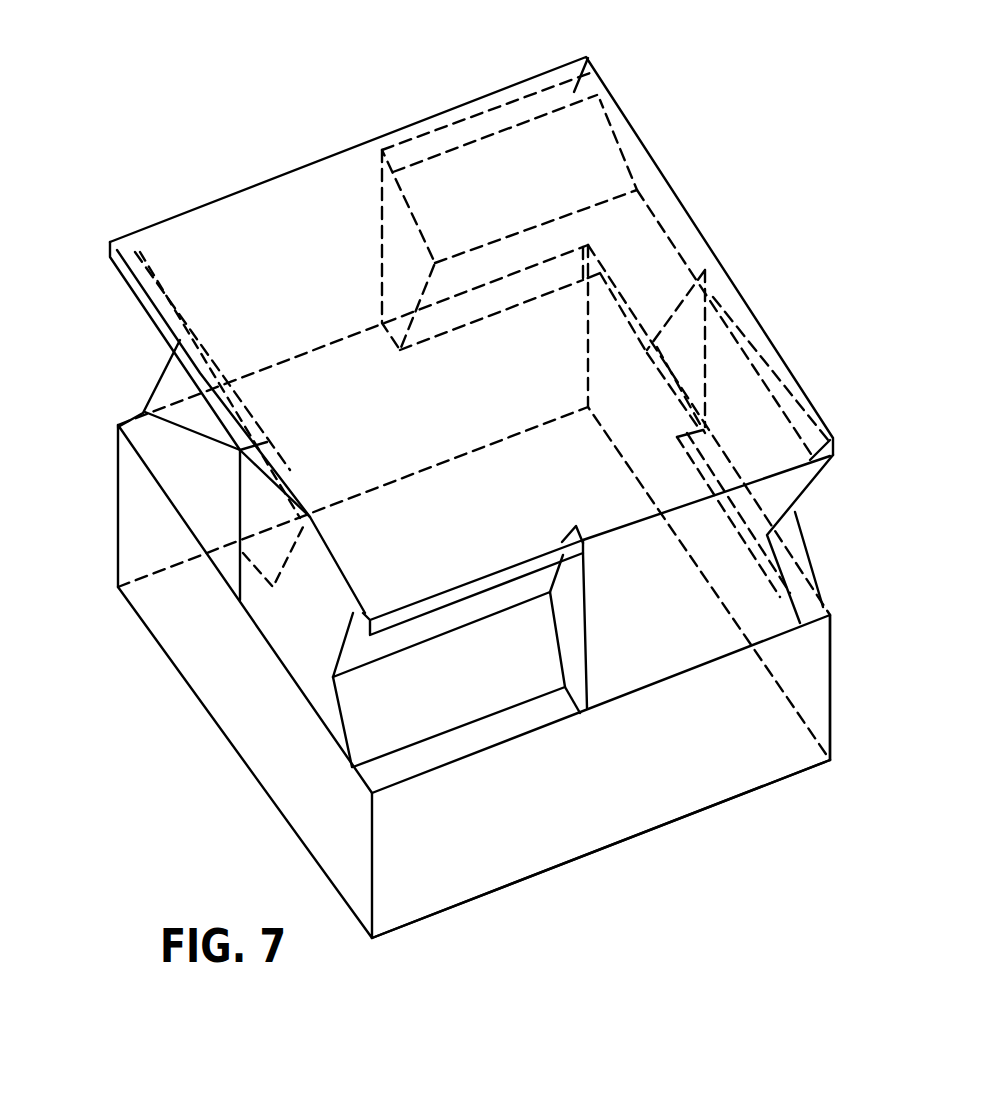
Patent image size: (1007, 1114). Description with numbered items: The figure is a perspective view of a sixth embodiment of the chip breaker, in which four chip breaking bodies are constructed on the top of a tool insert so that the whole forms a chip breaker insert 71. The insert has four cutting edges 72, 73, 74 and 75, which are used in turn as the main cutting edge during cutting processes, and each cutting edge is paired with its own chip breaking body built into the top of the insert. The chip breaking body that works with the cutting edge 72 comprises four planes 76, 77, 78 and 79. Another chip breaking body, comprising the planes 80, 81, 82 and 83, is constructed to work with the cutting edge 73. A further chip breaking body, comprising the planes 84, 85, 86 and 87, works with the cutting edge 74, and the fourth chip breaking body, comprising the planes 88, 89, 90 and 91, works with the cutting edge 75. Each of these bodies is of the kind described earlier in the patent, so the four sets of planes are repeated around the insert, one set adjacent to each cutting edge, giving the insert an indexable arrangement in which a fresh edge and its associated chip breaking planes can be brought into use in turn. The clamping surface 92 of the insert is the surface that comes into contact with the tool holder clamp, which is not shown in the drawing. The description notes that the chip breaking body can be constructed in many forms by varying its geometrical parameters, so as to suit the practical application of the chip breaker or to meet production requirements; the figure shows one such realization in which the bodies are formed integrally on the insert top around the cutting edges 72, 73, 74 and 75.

The chip breaker insert 71 is at (205, 620).
The cutting edge 72 is at (432, 772).
The cutting edge 73 is at (820, 600).
The cutting edge 74 is at (533, 266).
The cutting edge 75 is at (155, 485).
The plane 76 is at (483, 703).
The plane 77 is at (580, 672).
The plane 78 is at (493, 602).
The plane 79 is at (545, 570).
The plane 80 is at (781, 570).
The plane 81 is at (797, 488).
The plane 82 is at (830, 445).
The plane 83 is at (687, 342).
The plane 84 is at (608, 228).
The plane 85 is at (598, 157).
The plane 86 is at (582, 62).
The plane 87 is at (397, 233).
The plane 88 is at (152, 408).
The plane 89 is at (180, 340).
The plane 90 is at (125, 287).
The plane 91 is at (268, 510).
The clamping surface 92 is at (447, 428).